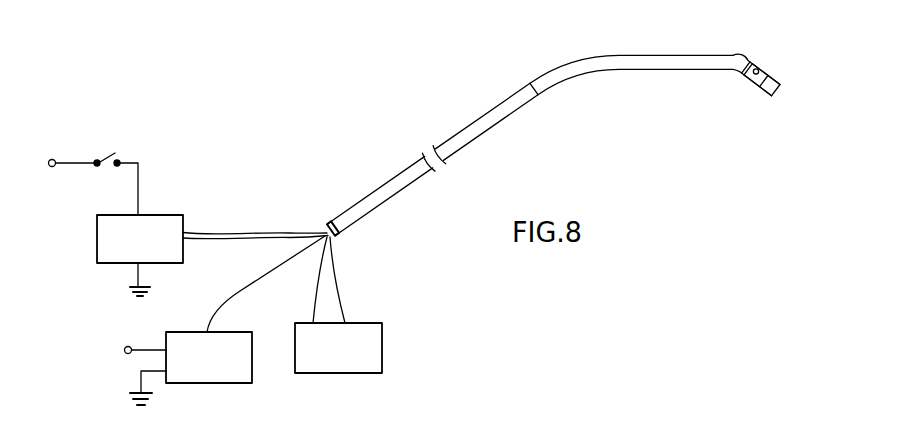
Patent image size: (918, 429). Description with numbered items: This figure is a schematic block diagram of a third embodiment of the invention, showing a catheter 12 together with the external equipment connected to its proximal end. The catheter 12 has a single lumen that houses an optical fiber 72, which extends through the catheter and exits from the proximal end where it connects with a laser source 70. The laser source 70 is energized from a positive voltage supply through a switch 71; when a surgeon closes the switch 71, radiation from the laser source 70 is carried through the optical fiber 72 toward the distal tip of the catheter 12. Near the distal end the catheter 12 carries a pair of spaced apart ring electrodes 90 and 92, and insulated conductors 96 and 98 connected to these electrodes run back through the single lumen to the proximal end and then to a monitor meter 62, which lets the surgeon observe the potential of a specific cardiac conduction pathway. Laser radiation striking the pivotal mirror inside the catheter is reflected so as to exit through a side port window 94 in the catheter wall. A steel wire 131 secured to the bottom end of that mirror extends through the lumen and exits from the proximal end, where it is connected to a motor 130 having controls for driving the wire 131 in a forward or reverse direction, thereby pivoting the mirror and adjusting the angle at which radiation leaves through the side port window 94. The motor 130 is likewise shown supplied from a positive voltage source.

The catheter 12 is at (463, 120).
The monitor meter 62 is at (377, 354).
The laser source 70 is at (97, 232).
The switch 71 is at (112, 151).
The optical fiber 72 is at (247, 232).
The ring electrode 90 is at (742, 67).
The ring electrode 92 is at (766, 86).
The side port window 94 is at (758, 70).
The insulated conductor 96 is at (314, 298).
The insulated conductor 98 is at (337, 287).
The motor 130 is at (213, 372).
The steel wire 131 is at (240, 292).